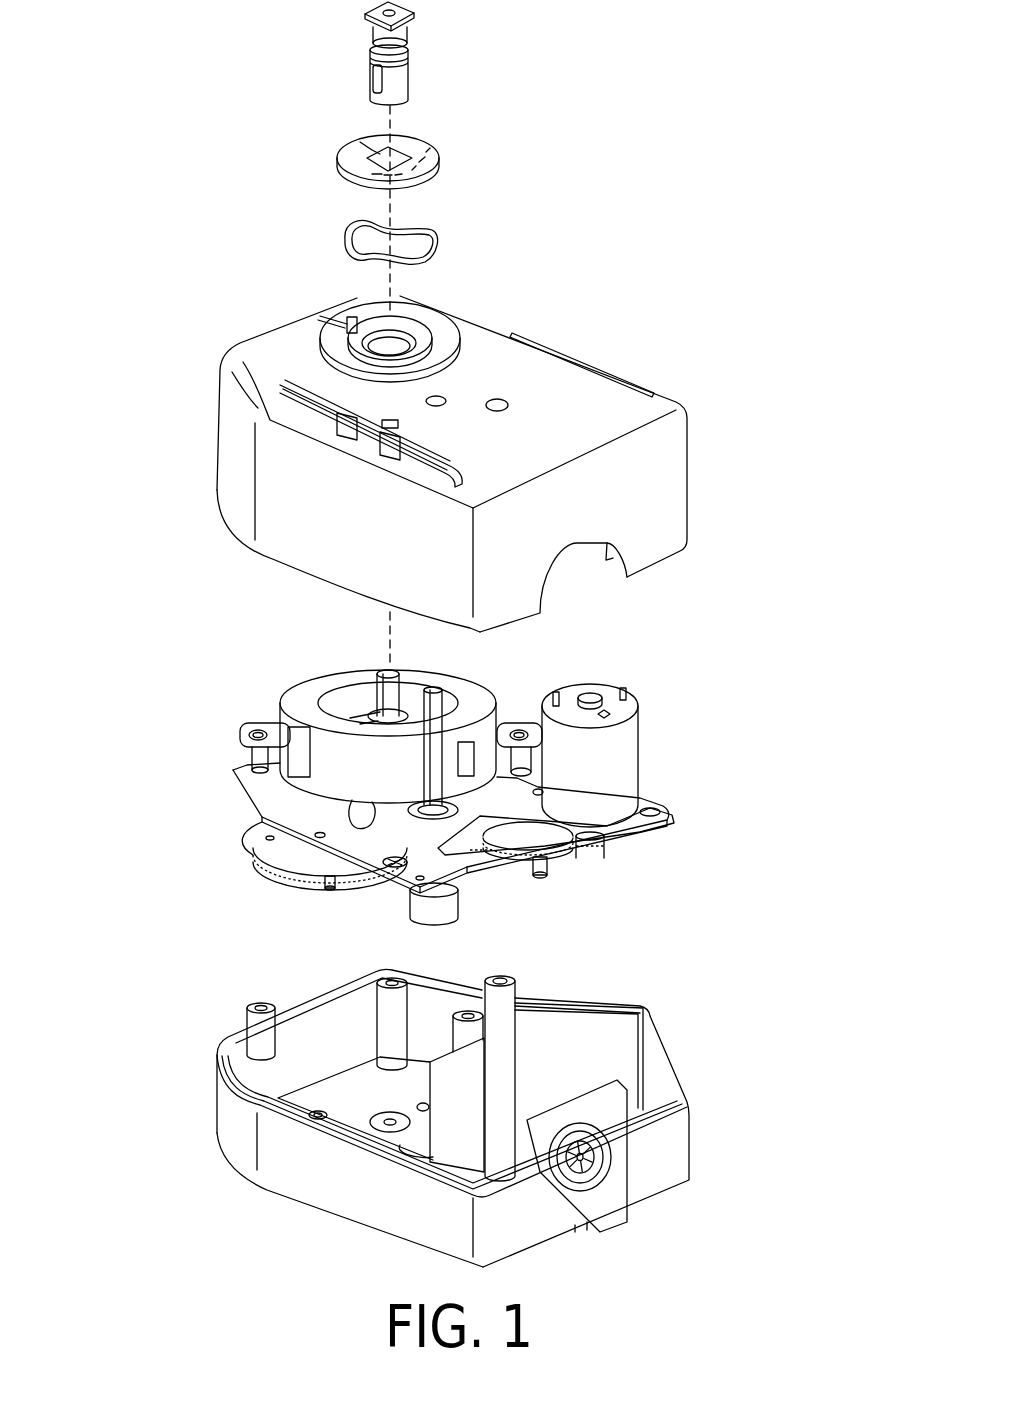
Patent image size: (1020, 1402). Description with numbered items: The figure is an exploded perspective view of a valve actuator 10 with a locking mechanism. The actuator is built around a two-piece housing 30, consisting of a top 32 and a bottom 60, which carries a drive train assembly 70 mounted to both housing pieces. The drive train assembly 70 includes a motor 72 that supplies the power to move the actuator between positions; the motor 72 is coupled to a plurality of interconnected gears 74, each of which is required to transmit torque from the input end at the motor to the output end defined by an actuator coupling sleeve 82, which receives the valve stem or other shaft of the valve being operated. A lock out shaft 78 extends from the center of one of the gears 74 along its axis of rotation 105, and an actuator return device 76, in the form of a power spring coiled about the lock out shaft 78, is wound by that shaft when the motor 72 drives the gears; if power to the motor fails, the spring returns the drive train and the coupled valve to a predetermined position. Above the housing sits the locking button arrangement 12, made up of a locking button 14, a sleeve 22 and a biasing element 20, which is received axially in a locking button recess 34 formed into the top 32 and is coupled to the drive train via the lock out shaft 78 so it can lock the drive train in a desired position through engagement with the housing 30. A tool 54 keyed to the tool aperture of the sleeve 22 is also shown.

The valve actuator 10 is at (733, 688).
The locking button arrangement 12 is at (326, 283).
The locking button 14 is at (443, 162).
The biasing element 20 is at (440, 248).
The sleeve 22 is at (412, 70).
The housing 30 is at (158, 417).
The top 32 is at (603, 357).
The locking button recess 34 is at (447, 333).
The tool 54 is at (282, 392).
The bottom 60 is at (692, 1130).
The drive train assembly 70 is at (704, 806).
The motor 72 is at (623, 740).
The plurality of interconnected gears 74 is at (250, 884).
The actuator return device 76 is at (312, 710).
The lock out shaft 78 is at (377, 692).
The actuator coupling sleeve 82 is at (453, 903).
The axis of rotation 105 is at (388, 622).